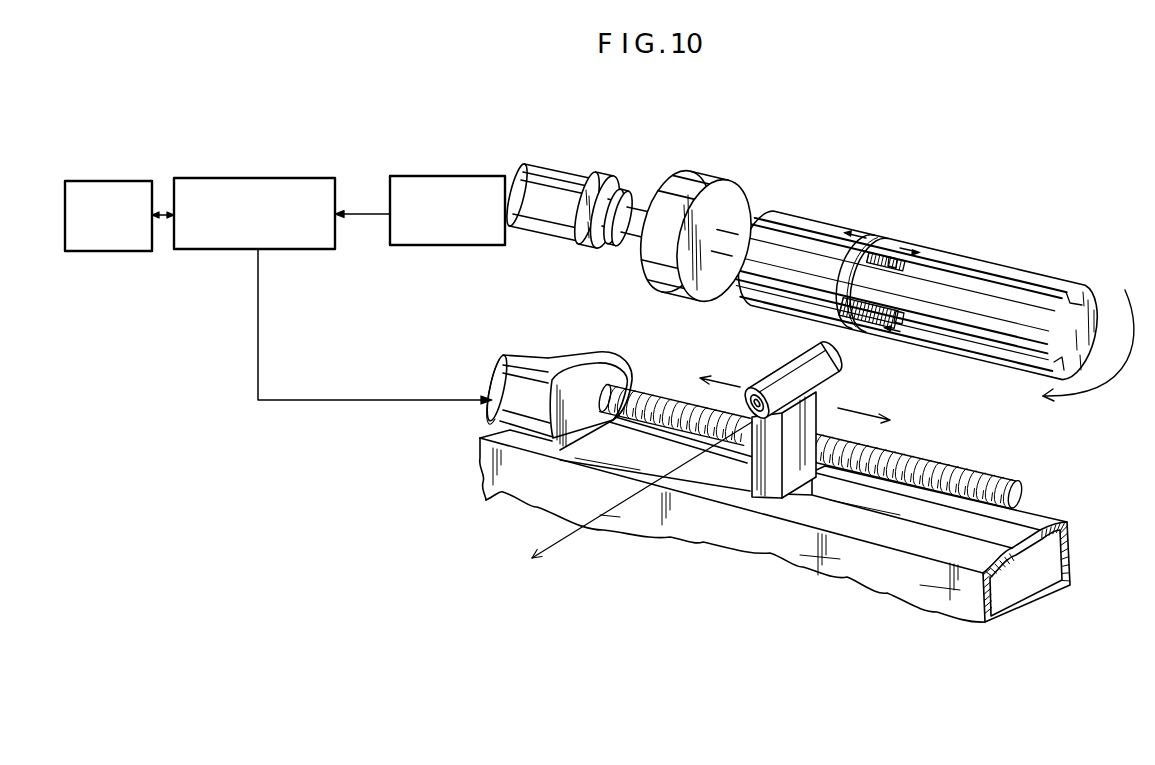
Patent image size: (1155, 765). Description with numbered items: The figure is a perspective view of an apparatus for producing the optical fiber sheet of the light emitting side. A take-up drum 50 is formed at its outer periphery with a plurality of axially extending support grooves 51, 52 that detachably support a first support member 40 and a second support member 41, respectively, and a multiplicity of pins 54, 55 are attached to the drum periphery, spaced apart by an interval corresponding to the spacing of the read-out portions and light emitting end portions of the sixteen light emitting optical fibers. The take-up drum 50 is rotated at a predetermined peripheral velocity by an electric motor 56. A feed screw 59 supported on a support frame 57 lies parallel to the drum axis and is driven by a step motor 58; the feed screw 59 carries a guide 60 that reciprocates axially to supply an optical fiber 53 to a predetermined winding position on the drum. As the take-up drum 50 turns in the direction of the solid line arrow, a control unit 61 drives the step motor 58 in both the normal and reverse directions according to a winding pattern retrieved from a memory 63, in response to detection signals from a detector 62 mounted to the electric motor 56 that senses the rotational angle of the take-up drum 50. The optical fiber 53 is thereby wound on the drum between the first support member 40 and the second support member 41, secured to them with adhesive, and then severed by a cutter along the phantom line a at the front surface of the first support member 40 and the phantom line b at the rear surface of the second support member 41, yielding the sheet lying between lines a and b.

The first support member 40 is at (897, 257).
The second support member 41 is at (902, 328).
The take-up drum 50 is at (934, 290).
The support groove 51 is at (1002, 285).
The support groove 52 is at (978, 342).
The optical fiber 53 is at (590, 526).
The pins 54 is at (887, 257).
The pins 55 is at (873, 324).
The electric motor 56 is at (561, 166).
The support frame 57 is at (787, 556).
The step motor 58 is at (532, 356).
The feed screw 59 is at (935, 476).
The guide 60 is at (788, 370).
The control unit 61 is at (268, 178).
The detector 62 is at (452, 176).
The memory 63 is at (103, 180).
The phantom line a is at (862, 228).
The phantom line b is at (840, 320).